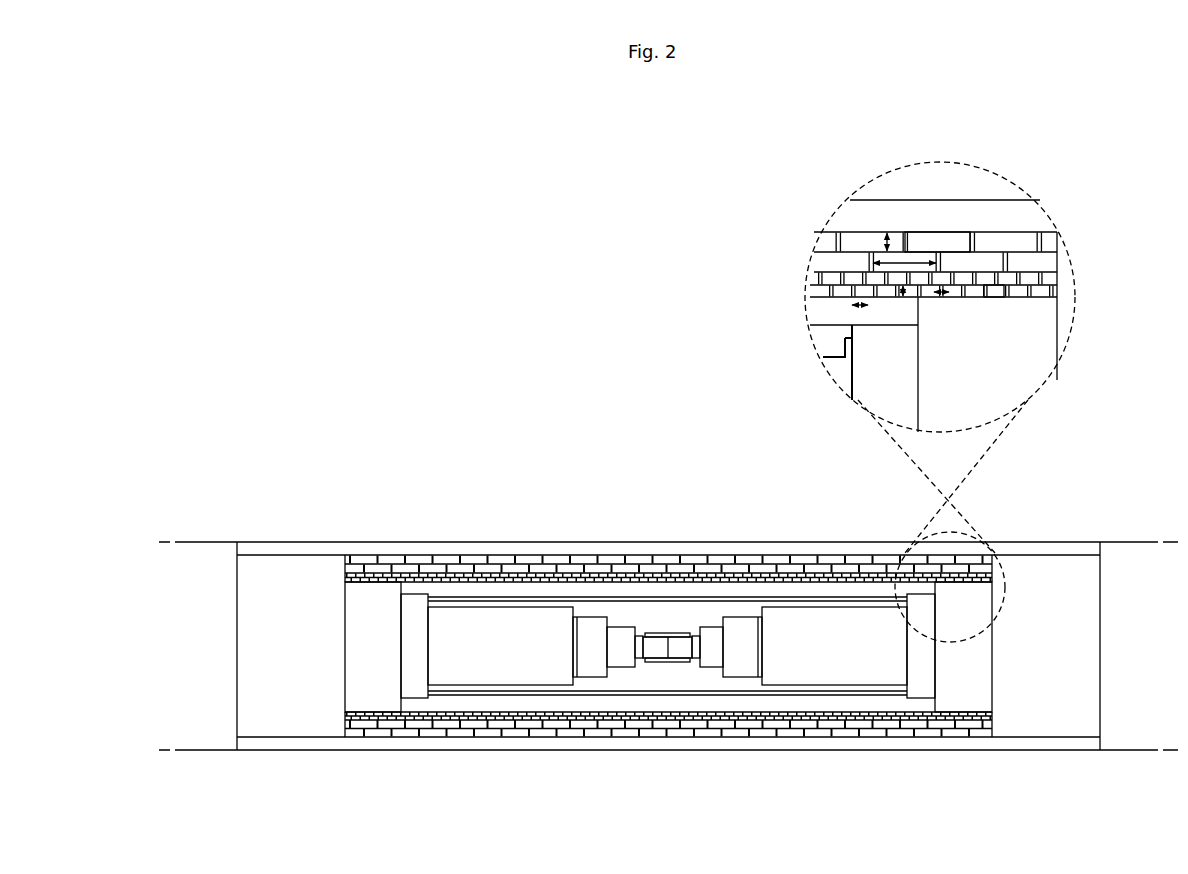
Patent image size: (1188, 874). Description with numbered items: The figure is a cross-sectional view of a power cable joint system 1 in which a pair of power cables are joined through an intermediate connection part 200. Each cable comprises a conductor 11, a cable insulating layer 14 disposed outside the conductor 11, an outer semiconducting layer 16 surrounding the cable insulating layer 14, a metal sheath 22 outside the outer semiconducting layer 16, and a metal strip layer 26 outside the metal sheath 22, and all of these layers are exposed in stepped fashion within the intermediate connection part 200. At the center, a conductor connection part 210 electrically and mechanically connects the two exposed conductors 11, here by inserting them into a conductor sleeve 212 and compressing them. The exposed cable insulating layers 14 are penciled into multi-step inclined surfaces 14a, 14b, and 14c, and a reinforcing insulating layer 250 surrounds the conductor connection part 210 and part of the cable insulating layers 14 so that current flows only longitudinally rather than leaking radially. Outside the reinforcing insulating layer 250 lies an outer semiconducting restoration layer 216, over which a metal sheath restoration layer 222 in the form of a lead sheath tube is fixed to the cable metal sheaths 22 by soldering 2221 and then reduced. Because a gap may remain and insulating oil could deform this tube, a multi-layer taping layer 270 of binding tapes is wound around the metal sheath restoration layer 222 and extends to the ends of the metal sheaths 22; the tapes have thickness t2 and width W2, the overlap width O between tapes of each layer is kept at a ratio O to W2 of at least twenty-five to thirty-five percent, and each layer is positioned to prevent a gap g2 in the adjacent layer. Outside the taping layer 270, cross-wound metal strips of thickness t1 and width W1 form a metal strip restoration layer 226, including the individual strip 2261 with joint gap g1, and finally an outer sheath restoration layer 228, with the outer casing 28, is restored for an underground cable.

The power cable joint system 1 is at (440, 388).
The intermediate connection part 200 is at (722, 522).
The conductor connection part 210 is at (665, 622).
The conductor sleeve 212 is at (665, 663).
The conductor 11 is at (650, 645).
The cable insulating layer 14 is at (513, 673).
The inclined surface 14a is at (640, 637).
The inclined surface 14b is at (607, 623).
The inclined surface 14c is at (573, 615).
The outer semiconducting layer 16 is at (418, 692).
The metal sheath 22 is at (375, 700).
The metal strip layer 26 is at (298, 725).
The outer shell plate 28 is at (222, 723).
The outer semiconducting restoration layer 216 is at (797, 597).
The metal sheath restoration layer 222 is at (837, 583).
The metal strip restoration layer 226 is at (478, 573).
The outer sheath restoration layer 228 is at (757, 552).
The reinforcing insulating layer 250 is at (643, 617).
The taping layer 270 is at (527, 578).
The brick 2261 is at (947, 242).
The soldering 2221 is at (1000, 290).
The overlap width O is at (852, 345).
The thickness of metal strips t1 is at (887, 240).
The thickness of binding tapes t2 is at (903, 295).
The brick gap g1 is at (837, 245).
The gap g2 is at (820, 278).
The width of metal strips W1 is at (917, 263).
The width of binding tapes W2 is at (940, 297).